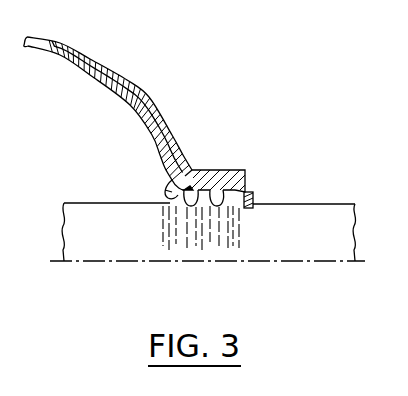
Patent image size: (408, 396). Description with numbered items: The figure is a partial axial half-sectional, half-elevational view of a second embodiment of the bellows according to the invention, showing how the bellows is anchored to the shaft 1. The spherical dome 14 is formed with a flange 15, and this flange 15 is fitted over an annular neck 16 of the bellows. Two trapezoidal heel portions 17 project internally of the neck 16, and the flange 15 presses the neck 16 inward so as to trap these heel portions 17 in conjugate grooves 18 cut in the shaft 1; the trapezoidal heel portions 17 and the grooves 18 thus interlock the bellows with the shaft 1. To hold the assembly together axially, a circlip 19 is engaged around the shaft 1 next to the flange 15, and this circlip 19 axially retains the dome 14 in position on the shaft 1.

The shaft 1 is at (295, 212).
The spherical dome 14 is at (120, 72).
The flange 15 is at (227, 172).
The annular neck 16 is at (163, 190).
The trapezoidal heel portions 17 is at (216, 208).
The conjugate grooves 18 is at (194, 169).
The circlip 19 is at (250, 193).